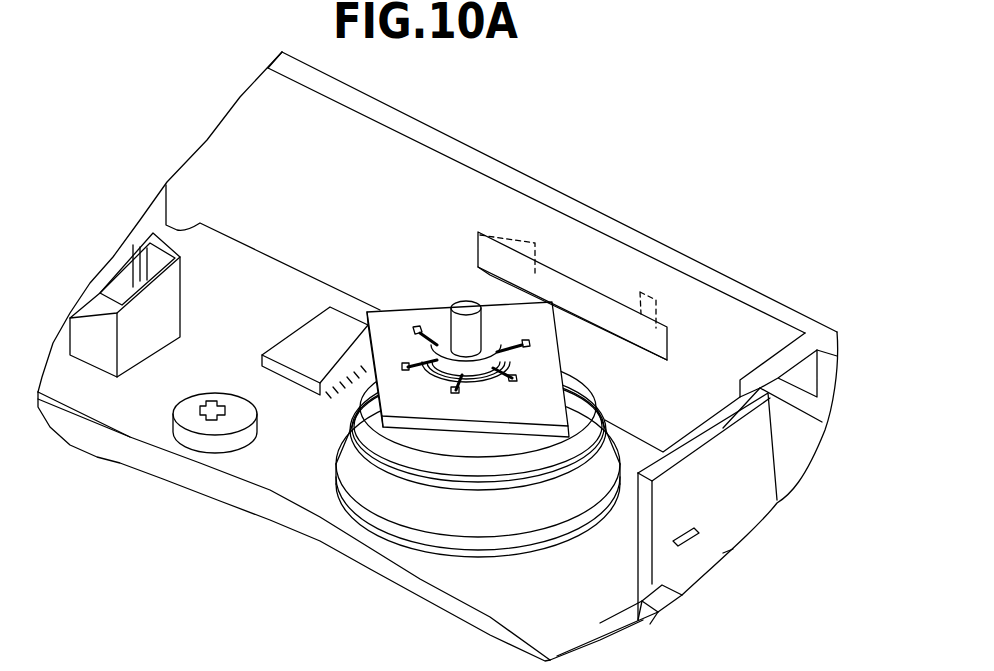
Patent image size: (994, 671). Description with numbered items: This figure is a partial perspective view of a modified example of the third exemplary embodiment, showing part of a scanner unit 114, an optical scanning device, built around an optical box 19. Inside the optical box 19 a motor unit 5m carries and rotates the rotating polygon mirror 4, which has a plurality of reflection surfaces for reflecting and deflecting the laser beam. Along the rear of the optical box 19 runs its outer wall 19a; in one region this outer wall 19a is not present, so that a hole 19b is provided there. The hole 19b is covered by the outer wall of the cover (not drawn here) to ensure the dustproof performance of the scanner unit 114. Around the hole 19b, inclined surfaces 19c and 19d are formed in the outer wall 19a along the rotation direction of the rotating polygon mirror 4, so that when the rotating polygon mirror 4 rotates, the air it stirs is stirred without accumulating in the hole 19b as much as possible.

The optical box 19 is at (170, 470).
The outer wall 19a is at (370, 182).
The hole 19b is at (573, 283).
The inclined surface 19c is at (503, 253).
The inclined surface 19d is at (655, 300).
The scanner unit 114 is at (796, 252).
The rotating polygon mirror 4 is at (400, 395).
The motor unit 5m is at (435, 513).